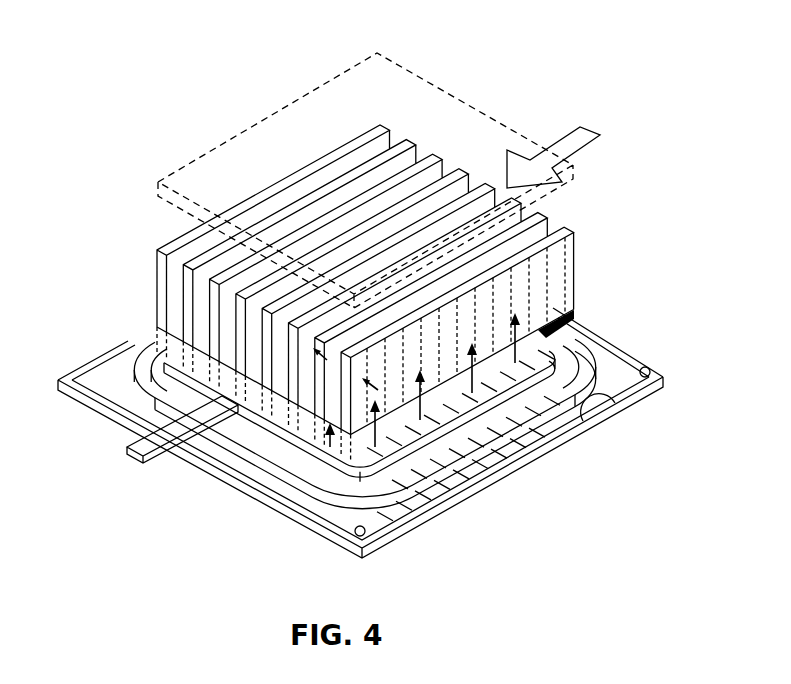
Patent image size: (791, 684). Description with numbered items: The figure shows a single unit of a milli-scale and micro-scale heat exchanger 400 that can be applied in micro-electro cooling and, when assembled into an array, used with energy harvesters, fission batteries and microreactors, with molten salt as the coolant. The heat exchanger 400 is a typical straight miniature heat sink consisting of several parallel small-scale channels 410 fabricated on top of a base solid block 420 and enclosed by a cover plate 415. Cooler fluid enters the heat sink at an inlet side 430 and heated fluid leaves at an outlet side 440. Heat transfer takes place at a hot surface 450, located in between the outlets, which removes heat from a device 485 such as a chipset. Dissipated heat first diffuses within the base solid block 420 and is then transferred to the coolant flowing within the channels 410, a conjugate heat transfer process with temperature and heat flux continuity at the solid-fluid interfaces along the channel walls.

The heat exchanger 400 is at (558, 65).
The channels 410 is at (167, 264).
The cover plate 415 is at (182, 166).
The base solid block 420 is at (567, 343).
The inlet side 430 is at (598, 139).
The outlet side 440 is at (163, 443).
The hot surface 450 is at (300, 421).
The device 485 is at (652, 387).